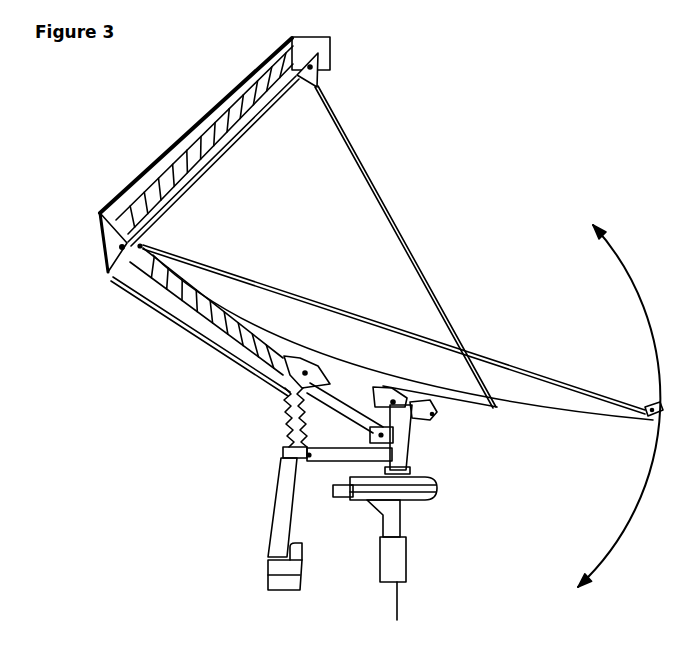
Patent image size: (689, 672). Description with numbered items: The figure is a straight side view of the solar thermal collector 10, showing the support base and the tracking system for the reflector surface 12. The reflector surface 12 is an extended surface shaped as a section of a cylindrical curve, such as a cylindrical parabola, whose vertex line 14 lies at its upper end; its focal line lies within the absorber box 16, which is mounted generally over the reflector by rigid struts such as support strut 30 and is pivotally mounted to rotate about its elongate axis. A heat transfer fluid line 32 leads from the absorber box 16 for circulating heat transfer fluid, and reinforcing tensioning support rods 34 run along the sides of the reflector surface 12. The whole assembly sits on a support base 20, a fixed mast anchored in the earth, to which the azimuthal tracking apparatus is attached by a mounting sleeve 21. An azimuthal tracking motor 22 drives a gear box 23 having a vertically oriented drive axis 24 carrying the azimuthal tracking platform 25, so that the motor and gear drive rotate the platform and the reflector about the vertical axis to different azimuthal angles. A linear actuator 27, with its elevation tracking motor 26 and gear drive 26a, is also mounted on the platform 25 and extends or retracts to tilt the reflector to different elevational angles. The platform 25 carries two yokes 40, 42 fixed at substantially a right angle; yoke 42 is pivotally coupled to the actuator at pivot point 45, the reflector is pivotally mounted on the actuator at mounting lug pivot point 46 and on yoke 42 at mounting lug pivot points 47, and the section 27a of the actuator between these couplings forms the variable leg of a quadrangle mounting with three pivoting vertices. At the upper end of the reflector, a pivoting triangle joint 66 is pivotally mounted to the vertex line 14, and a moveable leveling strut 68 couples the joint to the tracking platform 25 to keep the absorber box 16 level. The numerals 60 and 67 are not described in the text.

The solar thermal collector 10 is at (560, 138).
The reflector surface 12 is at (572, 428).
The vertex line 14 is at (146, 245).
The absorber box 16 is at (330, 39).
The support base 20 is at (397, 616).
The mounting sleeve 21 is at (406, 563).
The azimuthal tracking motor 22 is at (341, 498).
The gear box 23 is at (433, 498).
The drive axis 24 is at (428, 475).
The azimuthal tracking platform 25 is at (415, 461).
The elevation tracking motor 26 is at (306, 562).
The gear drive 26a is at (290, 579).
The linear actuator 27 is at (277, 511).
The section of the linear actuator 27a is at (282, 430).
The support strut 30 is at (240, 141).
The heat transfer fluid line 32 is at (232, 97).
The tensioning support rods 34 is at (258, 283).
The yoke 40 is at (373, 455).
The yoke 42 is at (405, 430).
The pivot point 45 is at (306, 468).
The mounting lug pivot point 46 is at (290, 378).
The mounting lug pivot points 47 is at (403, 337).
The upper arm rail 60 is at (175, 148).
The pivoting triangle joint 66 is at (100, 243).
The cable anchor 67 is at (322, 80).
The leveling strut 68 is at (211, 338).